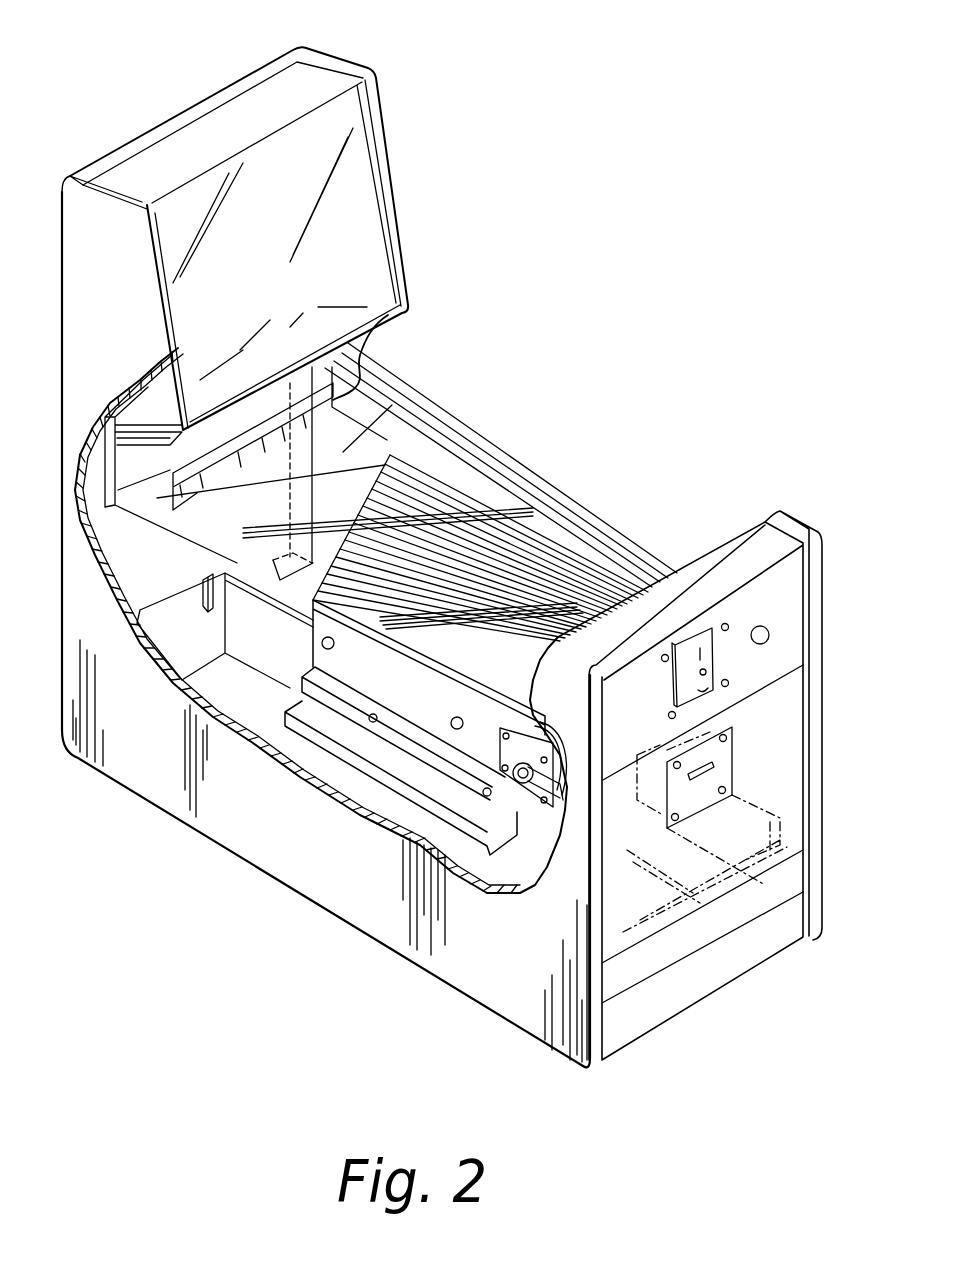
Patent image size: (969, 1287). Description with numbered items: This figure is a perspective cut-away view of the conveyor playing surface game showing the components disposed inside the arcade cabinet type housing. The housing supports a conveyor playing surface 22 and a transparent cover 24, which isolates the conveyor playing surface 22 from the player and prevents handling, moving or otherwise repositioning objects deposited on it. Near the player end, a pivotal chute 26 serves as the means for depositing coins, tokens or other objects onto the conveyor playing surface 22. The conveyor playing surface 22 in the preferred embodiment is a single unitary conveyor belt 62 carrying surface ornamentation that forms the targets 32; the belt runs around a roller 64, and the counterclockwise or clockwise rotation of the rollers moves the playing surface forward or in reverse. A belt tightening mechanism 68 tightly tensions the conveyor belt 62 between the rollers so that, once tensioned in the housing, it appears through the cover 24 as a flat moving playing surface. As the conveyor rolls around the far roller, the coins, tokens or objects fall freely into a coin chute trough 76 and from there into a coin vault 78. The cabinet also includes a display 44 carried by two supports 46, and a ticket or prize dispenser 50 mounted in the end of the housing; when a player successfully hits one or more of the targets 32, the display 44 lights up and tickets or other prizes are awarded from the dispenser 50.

The conveyor playing surface 22 is at (490, 657).
The transparent cover 24 is at (392, 405).
The pivotal chute 26 is at (707, 656).
The targets 32 is at (332, 400).
The display 44 is at (347, 242).
The supports 46 is at (377, 90).
The ticket or prize dispenser 50 is at (735, 763).
The conveyor belt 62 is at (470, 568).
The roller 64 is at (524, 727).
The belt tightening mechanism 68 is at (520, 820).
The coin chute trough 76 is at (237, 563).
The coin vault 78 is at (250, 630).